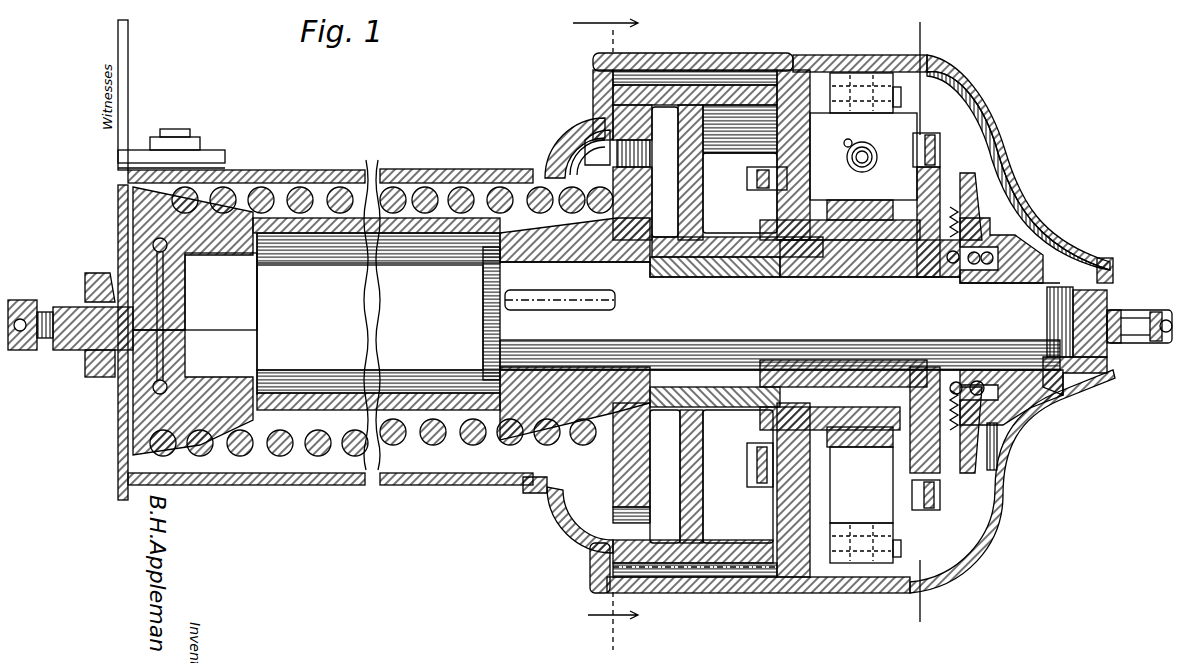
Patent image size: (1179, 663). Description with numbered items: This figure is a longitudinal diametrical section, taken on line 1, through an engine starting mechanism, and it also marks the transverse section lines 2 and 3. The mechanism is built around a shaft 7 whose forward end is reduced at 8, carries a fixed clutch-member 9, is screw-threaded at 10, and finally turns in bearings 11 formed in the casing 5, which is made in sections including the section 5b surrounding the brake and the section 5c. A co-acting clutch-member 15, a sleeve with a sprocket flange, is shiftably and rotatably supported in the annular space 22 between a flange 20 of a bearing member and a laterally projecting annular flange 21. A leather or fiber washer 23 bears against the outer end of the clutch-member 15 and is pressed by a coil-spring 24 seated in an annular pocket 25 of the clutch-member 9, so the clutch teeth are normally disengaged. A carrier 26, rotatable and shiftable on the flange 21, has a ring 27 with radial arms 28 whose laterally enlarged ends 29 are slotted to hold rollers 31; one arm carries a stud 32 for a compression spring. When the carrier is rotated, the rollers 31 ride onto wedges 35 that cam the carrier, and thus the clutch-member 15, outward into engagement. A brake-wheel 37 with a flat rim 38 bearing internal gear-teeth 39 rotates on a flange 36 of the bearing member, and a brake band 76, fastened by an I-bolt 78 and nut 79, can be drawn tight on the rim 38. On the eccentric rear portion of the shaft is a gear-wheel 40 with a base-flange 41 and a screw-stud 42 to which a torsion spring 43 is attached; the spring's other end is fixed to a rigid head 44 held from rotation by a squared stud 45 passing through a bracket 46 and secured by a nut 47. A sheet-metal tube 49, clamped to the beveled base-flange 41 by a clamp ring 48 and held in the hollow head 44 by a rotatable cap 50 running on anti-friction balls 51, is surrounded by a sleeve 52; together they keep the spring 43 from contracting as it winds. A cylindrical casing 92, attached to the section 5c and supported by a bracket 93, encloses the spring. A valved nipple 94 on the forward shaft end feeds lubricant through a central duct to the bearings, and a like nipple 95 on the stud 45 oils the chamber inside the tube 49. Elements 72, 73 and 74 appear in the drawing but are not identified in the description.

The section line 1- 1 is at (930, 150).
The section line 2- 2 is at (605, 331).
The section line 3- 3 is at (919, 325).
The casing 5 is at (825, 62).
The casing section 5b is at (700, 57).
The casing section 5c is at (581, 113).
The shaft 7 is at (840, 325).
The reduced portion 8 is at (998, 318).
The clutch-member 9 is at (1007, 277).
The screw-threaded portion 10 is at (1098, 277).
The bearings 11 is at (1105, 370).
The co-acting clutch-member 15 is at (870, 253).
The flange 20 is at (900, 273).
The annular flange 21 is at (840, 232).
The annular space 22 is at (793, 273).
The washer 23 is at (934, 367).
The coil-spring 24 is at (973, 267).
The annular pocket 25 is at (1010, 236).
The carrier 26 is at (863, 166).
The ring or collar 27 is at (870, 440).
The radial arms 28 is at (861, 505).
The laterally enlarged ends 29 is at (885, 83).
The rollers 31 is at (899, 106).
The stud 32 is at (855, 158).
The wedges 35 is at (775, 152).
The flange 36 is at (702, 277).
The brake-wheel 37 is at (762, 55).
The rim 38 is at (703, 552).
The gear-teeth 39 is at (640, 534).
The gear-wheel 40 is at (646, 324).
The base-flange 41 is at (592, 253).
The screw-stud 42 is at (583, 143).
The torsion spring 43 is at (462, 192).
The rigid head 44 is at (130, 262).
The stud 45 is at (185, 345).
The bracket 46 is at (120, 208).
The nut 47 is at (108, 280).
The clamp ring 48 is at (567, 445).
The tube 49 is at (340, 238).
The rotatable cap 50 is at (178, 300).
The anti-friction balls 51 is at (185, 375).
The sleeve 52 is at (432, 225).
The shaft 72 is at (771, 313).
The bore 73 is at (370, 317).
The casing 74 is at (995, 181).
The brake band 76 is at (957, 188).
The I-bolt 78 is at (758, 183).
The nut 79 is at (772, 230).
The cylindrical casing 92 is at (322, 166).
The bracket 93 is at (128, 110).
The valved-nipple 94 is at (1140, 310).
The nipple 95 is at (70, 341).